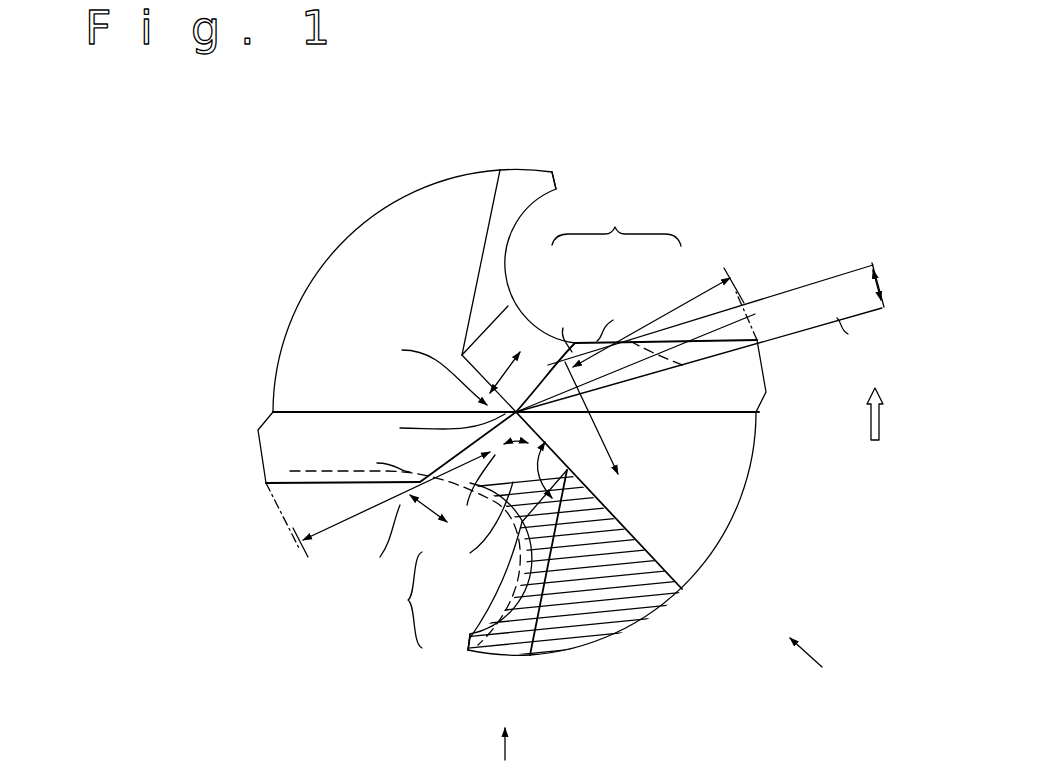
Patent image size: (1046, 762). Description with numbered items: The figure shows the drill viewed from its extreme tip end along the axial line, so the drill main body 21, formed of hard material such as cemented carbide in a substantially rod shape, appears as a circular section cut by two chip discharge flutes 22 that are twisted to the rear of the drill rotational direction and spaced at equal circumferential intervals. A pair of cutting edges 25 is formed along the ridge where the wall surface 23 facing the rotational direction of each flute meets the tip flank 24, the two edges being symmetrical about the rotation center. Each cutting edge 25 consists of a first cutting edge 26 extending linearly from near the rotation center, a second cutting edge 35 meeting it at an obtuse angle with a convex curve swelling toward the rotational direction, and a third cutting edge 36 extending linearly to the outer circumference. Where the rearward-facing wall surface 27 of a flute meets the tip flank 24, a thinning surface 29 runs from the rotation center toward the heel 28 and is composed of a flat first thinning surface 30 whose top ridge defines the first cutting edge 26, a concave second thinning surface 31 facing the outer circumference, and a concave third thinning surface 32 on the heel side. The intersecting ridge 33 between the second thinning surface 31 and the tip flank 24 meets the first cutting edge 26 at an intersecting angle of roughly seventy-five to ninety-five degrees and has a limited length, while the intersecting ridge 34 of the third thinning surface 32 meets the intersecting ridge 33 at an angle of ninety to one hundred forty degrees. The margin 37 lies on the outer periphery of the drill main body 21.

The drill main body 21 is at (539, 439).
The chip discharge flute 22 is at (657, 220).
The wall surface facing the drill rotational direction 23 is at (677, 292).
The tip flank 24 is at (290, 362).
The cutting edge 25 is at (260, 546).
The first cutting edge 26 is at (538, 340).
The wall surface facing the rear side of the drill rotational direction 27 is at (523, 233).
The heel 28 is at (552, 175).
The thinning surface 29 is at (486, 302).
The first thinning surface 30 is at (470, 553).
The second thinning surface 31 is at (490, 585).
The third thinning surface 32 is at (476, 642).
The intersecting ridge of second thinning surface and tip flank 33 is at (448, 372).
The intersecting ridge of third thinning surface and tip flank 34 is at (478, 264).
The second cutting edge 35 is at (582, 343).
The third cutting edge 36 is at (682, 345).
The margin 37 is at (258, 458).